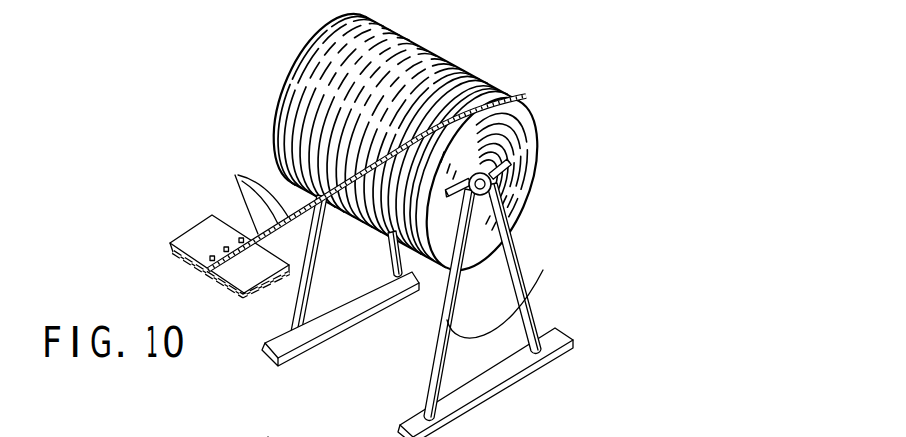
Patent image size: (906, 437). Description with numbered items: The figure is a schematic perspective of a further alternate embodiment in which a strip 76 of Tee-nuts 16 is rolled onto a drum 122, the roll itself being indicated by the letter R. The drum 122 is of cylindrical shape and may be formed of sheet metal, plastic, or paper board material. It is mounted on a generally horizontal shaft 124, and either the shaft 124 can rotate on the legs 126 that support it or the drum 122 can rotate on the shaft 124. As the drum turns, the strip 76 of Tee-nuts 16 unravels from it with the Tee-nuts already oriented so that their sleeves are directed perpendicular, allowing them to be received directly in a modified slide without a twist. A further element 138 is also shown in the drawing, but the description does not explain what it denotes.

The roll of sheet material 122 is at (526, 99).
The roll R is at (408, 28).
The hub / axle 124 is at (493, 182).
The stand legs 126 is at (519, 275).
The toothed belt 76 is at (288, 196).
The sheet material / base 16 is at (230, 222).
The sheet strip 138 is at (268, 436).